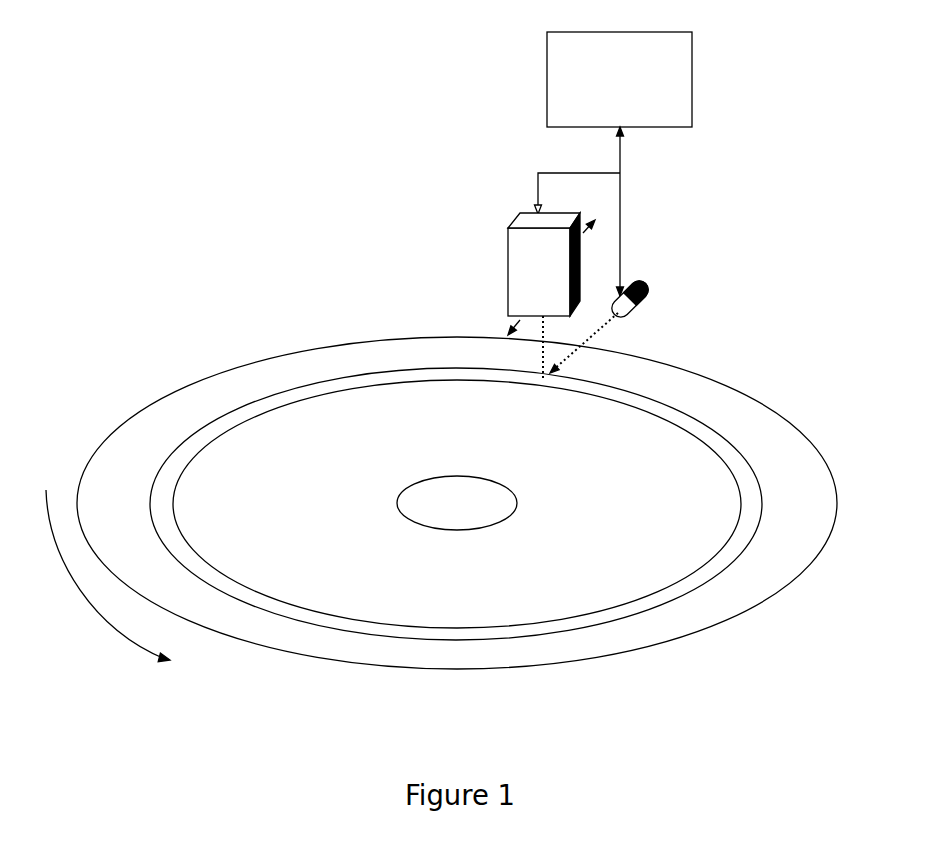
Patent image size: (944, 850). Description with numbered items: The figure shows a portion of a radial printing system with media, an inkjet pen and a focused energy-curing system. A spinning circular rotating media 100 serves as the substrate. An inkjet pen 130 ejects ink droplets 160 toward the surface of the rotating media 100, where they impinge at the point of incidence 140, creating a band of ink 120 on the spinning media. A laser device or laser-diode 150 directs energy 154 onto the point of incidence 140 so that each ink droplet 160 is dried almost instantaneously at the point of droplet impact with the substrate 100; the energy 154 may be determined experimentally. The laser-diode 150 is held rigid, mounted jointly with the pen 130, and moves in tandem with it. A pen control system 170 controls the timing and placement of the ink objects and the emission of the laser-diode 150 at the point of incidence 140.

The rotating media 100 is at (590, 660).
The band of ink 120 is at (352, 377).
The pen 130 is at (505, 257).
The point of incidence 140 is at (547, 380).
The laser-diode 150 is at (652, 287).
The energy 154 is at (603, 338).
The ink droplets 160 is at (537, 353).
The pen control system 170 is at (697, 78).